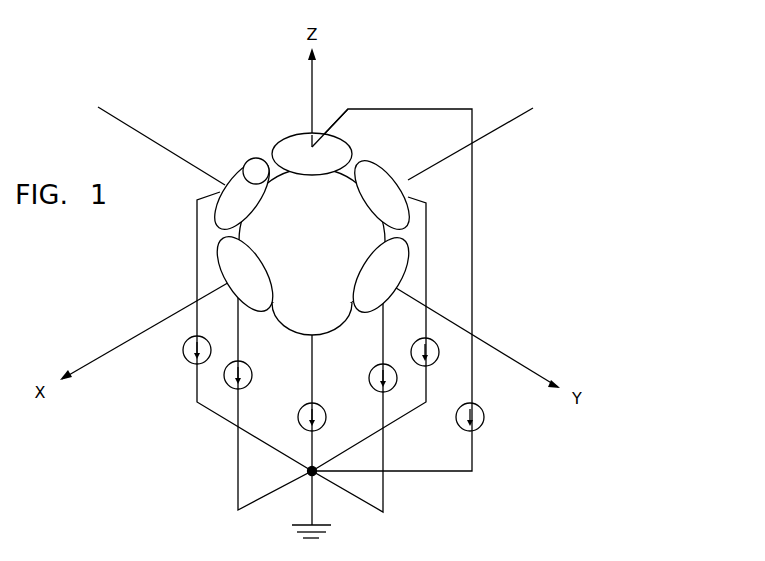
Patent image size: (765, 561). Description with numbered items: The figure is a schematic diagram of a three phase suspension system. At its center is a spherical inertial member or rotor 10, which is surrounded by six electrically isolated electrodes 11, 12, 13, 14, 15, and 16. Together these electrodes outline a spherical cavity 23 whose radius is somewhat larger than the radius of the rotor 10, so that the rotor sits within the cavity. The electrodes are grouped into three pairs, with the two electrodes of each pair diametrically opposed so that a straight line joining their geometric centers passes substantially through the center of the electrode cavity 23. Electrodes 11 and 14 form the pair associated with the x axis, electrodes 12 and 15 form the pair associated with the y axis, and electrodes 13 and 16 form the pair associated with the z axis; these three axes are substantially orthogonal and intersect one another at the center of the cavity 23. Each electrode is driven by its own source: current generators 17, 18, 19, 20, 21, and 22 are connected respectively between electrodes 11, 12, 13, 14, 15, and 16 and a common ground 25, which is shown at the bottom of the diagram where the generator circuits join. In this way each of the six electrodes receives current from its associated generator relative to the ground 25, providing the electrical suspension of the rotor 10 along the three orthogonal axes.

The spherical inertial member or rotor 10 is at (300, 278).
The electrode 11 is at (224, 252).
The electrode 12 is at (398, 254).
The electrode 13 is at (298, 140).
The electrode 14 is at (382, 170).
The electrode 15 is at (240, 172).
The electrode 16 is at (324, 333).
The current generator 17 is at (252, 373).
The current generator 18 is at (397, 384).
The current generator 19 is at (484, 422).
The current generator 20 is at (439, 356).
The current generator 21 is at (211, 352).
The current generator 22 is at (326, 418).
The spherical cavity 23 is at (248, 180).
The ground 25 is at (313, 542).